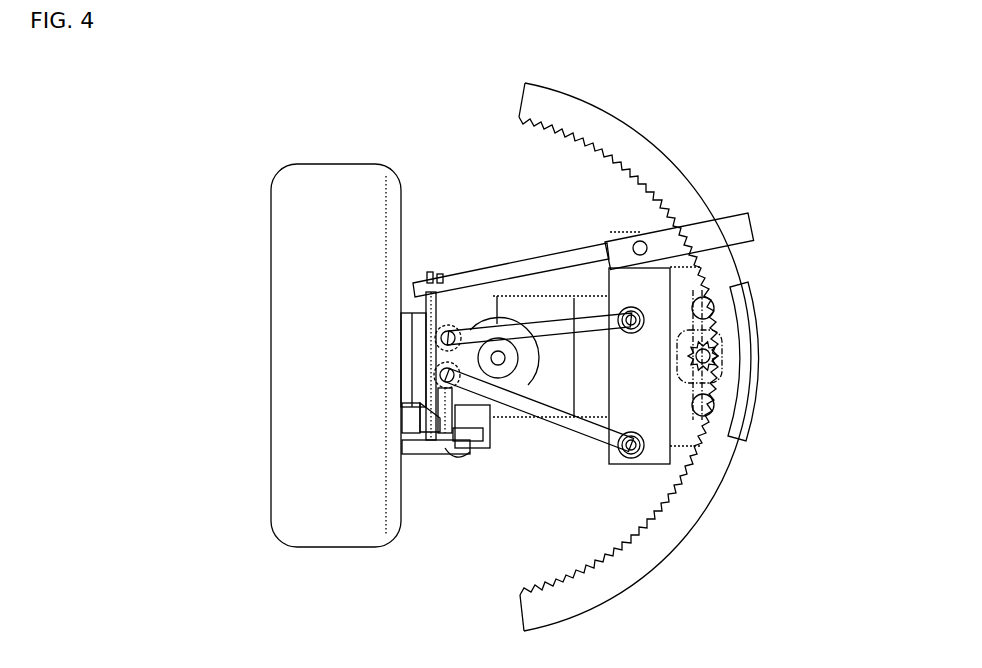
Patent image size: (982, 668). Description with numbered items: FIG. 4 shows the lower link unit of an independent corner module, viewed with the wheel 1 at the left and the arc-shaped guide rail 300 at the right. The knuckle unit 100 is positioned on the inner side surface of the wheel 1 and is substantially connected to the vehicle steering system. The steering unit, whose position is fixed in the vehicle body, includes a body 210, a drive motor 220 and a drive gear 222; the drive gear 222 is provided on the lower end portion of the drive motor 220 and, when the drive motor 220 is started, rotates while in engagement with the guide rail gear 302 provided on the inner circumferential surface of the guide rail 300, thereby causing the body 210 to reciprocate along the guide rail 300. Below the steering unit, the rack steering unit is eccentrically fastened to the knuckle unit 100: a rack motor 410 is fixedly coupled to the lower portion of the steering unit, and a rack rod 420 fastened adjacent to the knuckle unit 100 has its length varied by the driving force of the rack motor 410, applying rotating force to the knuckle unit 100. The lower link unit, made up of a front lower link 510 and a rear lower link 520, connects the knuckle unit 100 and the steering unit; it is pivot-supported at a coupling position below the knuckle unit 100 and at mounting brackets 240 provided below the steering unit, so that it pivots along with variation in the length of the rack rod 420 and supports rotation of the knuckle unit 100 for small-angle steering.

The wheel 1 is at (283, 228).
The knuckle unit 100 is at (440, 440).
The body 210 is at (590, 400).
The drive motor 220 is at (711, 340).
The drive gear 222 is at (720, 373).
The mounting brackets 240 is at (706, 314).
The guide rail 300 is at (625, 135).
The guide rail gear 302 is at (748, 415).
The rack motor 410 is at (733, 220).
The rack rod 420 is at (563, 262).
The front lower link 510 is at (520, 420).
The rear lower link 520 is at (538, 325).